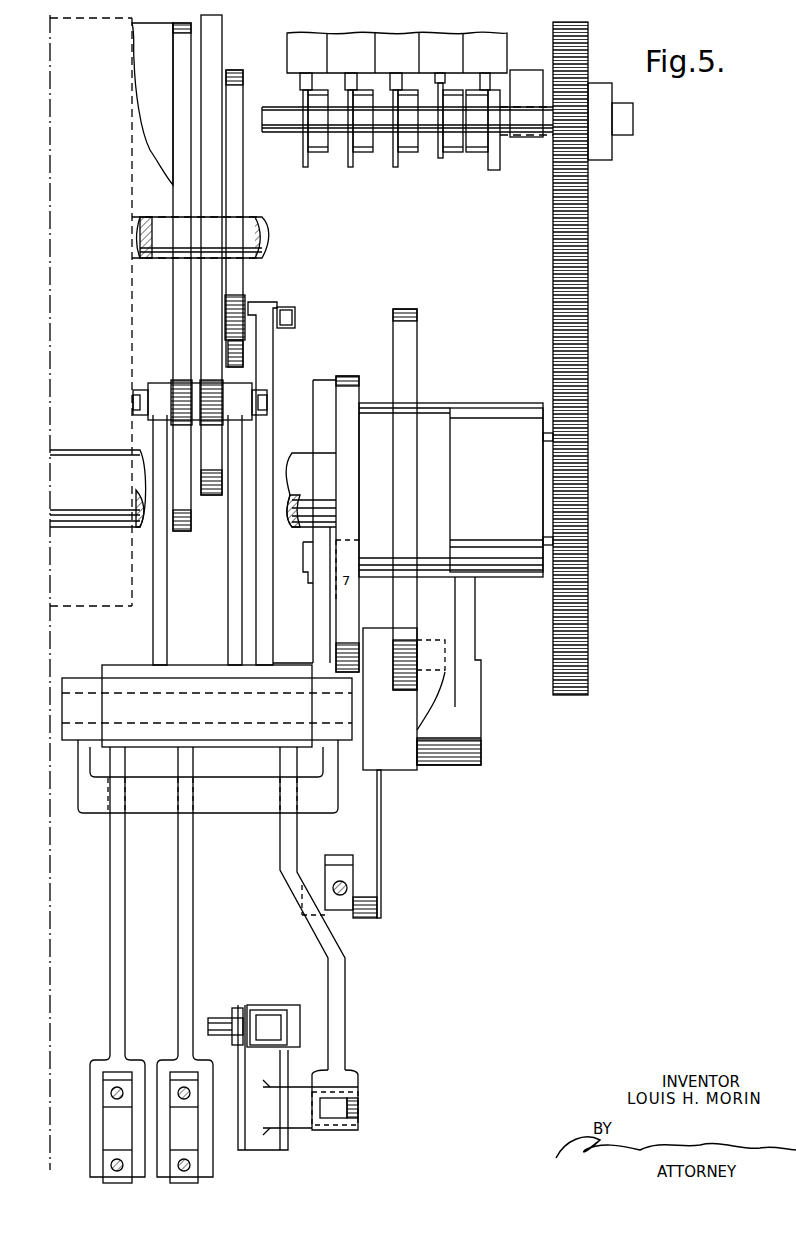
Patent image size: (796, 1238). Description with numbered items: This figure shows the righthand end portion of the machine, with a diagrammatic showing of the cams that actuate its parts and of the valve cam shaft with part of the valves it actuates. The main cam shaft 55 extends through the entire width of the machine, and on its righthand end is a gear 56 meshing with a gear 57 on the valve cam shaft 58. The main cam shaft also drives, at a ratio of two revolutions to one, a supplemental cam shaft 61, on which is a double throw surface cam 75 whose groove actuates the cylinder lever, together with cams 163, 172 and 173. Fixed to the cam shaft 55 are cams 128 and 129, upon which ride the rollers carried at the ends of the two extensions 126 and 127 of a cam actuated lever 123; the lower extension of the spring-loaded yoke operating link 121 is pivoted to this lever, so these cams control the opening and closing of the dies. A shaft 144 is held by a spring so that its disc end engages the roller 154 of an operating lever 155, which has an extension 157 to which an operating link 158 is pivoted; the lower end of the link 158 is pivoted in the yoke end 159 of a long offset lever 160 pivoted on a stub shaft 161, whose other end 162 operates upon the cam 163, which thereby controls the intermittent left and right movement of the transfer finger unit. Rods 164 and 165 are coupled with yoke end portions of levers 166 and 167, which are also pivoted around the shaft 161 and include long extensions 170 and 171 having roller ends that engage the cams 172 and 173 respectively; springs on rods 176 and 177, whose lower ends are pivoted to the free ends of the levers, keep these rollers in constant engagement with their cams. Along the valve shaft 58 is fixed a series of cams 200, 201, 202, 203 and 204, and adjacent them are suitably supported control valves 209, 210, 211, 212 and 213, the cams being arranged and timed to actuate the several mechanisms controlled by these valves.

The main cam shaft 55 is at (302, 462).
The gear 56 is at (588, 405).
The gear 57 is at (588, 246).
The valve cam shaft 58 is at (430, 120).
The supplemental cam shaft 61 is at (258, 220).
The double throw surface cam 75 is at (146, 58).
The operating link 121 is at (350, 888).
The cam actuated lever 123 is at (382, 838).
The extension 126 is at (336, 594).
The extension 127 is at (405, 650).
The cam 128 is at (345, 385).
The cam 129 is at (416, 340).
The shaft 144 is at (222, 1016).
The roller 154 is at (262, 1025).
The operating lever 155 is at (302, 1004).
The extension 157 is at (300, 1130).
The operating link 158 is at (355, 1112).
The yoke end 159 is at (358, 1074).
The long offset lever 160 is at (346, 1000).
The stub shaft 161 is at (290, 726).
The end 162 is at (273, 356).
The cam 163 is at (235, 278).
The rod 164 is at (110, 1096).
The rod 165 is at (183, 1087).
The lever 166 is at (112, 998).
The lever 167 is at (200, 946).
The extension 170 is at (161, 580).
The extension 171 is at (232, 598).
The cam 172 is at (182, 310).
The cam 173 is at (215, 190).
The rod 176 is at (110, 1165).
The rod 177 is at (190, 1165).
The cam 200 is at (494, 164).
The cam 201 is at (450, 158).
The cam 202 is at (395, 168).
The cam 203 is at (352, 168).
The cam 204 is at (303, 168).
The control valve 209 is at (487, 47).
The control valve 210 is at (440, 47).
The control valve 211 is at (395, 47).
The control valve 212 is at (349, 47).
The control valve 213 is at (305, 47).